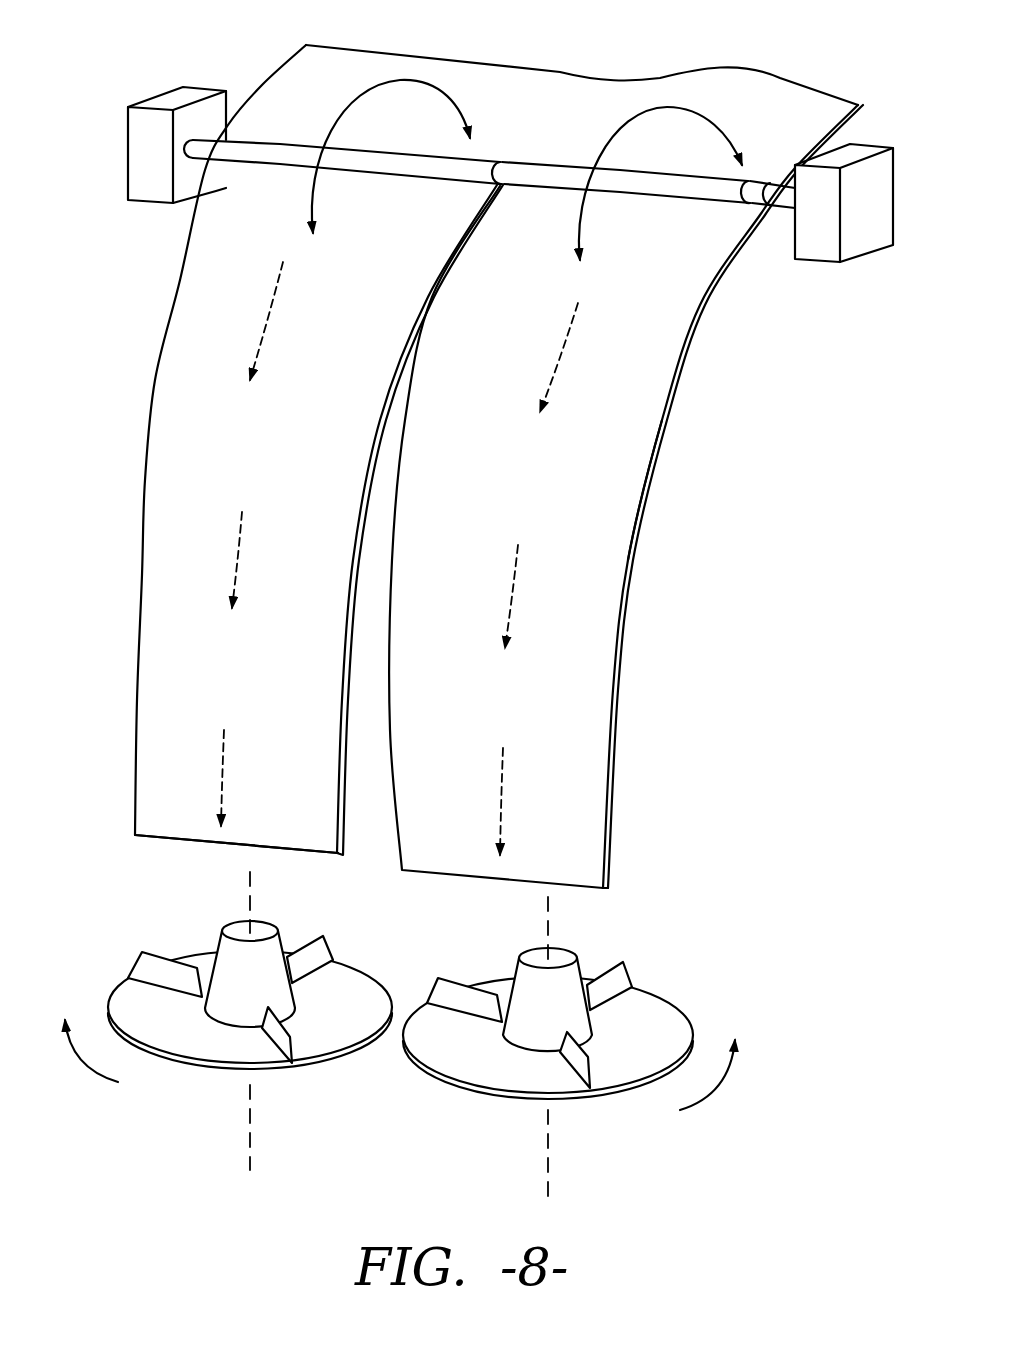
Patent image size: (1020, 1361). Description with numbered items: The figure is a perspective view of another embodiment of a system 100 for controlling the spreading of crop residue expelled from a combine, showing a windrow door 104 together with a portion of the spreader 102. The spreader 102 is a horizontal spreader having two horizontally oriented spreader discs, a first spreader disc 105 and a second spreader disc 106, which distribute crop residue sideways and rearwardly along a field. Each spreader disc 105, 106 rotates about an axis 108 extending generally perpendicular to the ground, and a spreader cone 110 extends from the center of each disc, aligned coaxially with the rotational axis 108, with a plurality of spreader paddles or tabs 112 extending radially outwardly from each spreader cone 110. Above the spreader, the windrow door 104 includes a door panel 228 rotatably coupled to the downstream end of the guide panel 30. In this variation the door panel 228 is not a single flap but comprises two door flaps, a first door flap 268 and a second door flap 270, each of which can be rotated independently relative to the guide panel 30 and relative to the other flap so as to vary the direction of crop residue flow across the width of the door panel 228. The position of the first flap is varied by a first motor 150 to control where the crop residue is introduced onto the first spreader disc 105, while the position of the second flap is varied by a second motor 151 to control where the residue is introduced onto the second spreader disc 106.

The guide panel 30 is at (553, 63).
The system for controlling the spreading of crop residue 100 is at (135, 280).
The spreader 102 is at (95, 945).
The windrow door 104 is at (675, 787).
The first spreader disc 105 is at (218, 1040).
The second spreader disc 106 is at (488, 1063).
The axis 108 is at (250, 1127).
The spreader cone 110 is at (227, 967).
The spreader paddles 112 is at (150, 967).
The first motor 150 is at (143, 147).
The second motor 151 is at (817, 235).
The door panel 228 is at (647, 507).
The first door flap 268 is at (167, 573).
The second door flap 270 is at (593, 617).